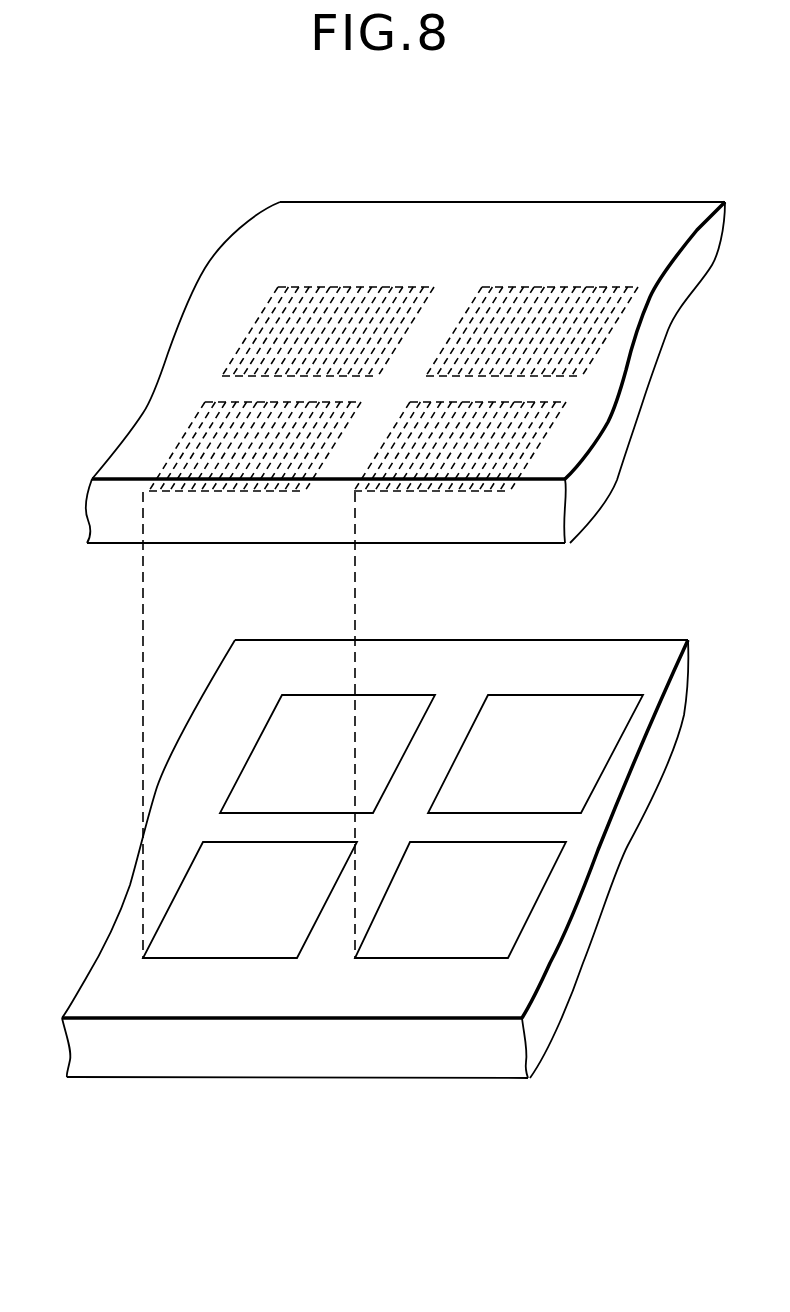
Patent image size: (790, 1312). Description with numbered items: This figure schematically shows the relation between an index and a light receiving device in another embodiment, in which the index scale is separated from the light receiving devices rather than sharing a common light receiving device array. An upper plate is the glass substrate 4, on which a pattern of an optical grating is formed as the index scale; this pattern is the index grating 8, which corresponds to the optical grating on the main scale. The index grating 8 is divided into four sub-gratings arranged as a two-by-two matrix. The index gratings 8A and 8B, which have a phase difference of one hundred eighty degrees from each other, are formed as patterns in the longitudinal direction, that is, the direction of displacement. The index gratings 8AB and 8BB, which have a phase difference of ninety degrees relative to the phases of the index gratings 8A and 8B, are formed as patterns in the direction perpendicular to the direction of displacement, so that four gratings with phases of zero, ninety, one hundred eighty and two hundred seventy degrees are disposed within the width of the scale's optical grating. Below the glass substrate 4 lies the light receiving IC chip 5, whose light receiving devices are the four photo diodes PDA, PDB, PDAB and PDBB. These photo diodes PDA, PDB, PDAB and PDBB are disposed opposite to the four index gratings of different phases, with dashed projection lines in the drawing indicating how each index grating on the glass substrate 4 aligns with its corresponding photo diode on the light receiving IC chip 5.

The glass substrate 4 is at (429, 218).
The index grating 8 is at (393, 361).
The index grating 8A is at (367, 285).
The index grating 8B is at (558, 288).
The index grating 8AB is at (223, 505).
The index grating 8BB is at (472, 493).
The light receiving IC chip 5 is at (375, 889).
The photo diode PDA is at (327, 754).
The photo diode PDB is at (535, 754).
The photo diode PDAB is at (250, 900).
The photo diode PDBB is at (460, 900).